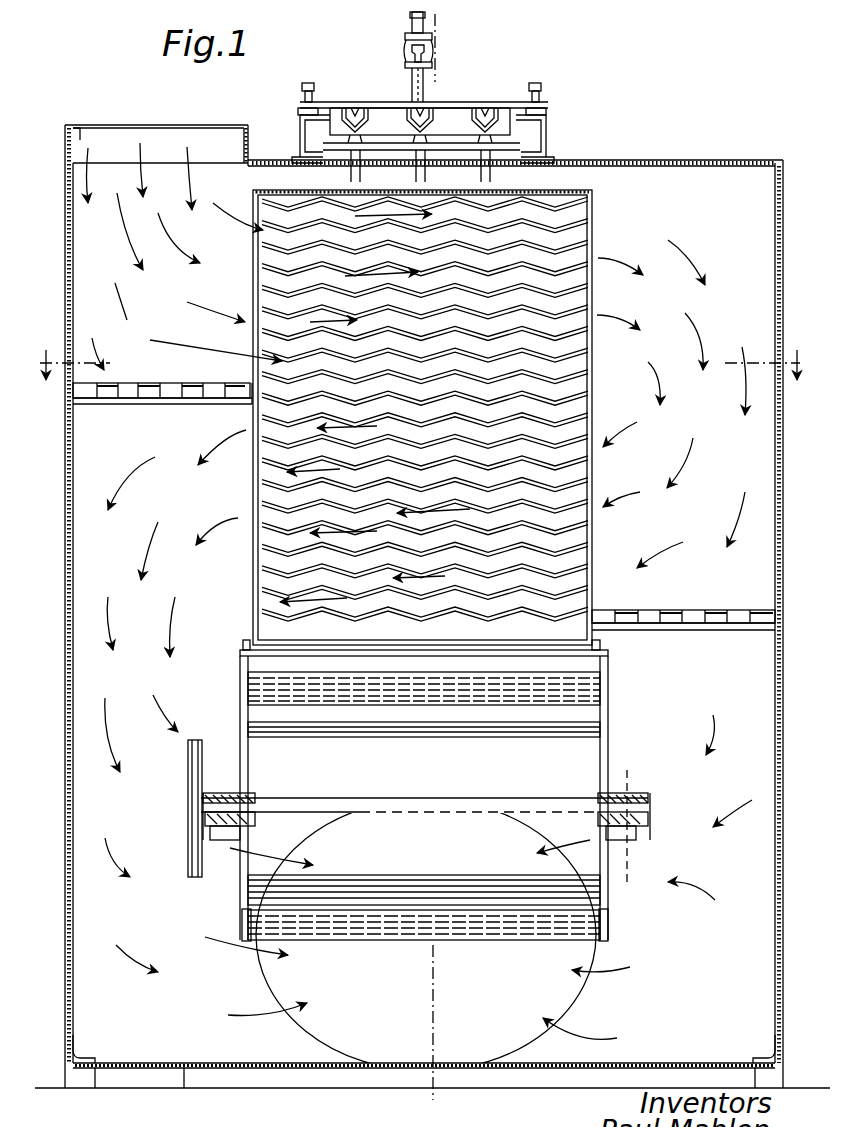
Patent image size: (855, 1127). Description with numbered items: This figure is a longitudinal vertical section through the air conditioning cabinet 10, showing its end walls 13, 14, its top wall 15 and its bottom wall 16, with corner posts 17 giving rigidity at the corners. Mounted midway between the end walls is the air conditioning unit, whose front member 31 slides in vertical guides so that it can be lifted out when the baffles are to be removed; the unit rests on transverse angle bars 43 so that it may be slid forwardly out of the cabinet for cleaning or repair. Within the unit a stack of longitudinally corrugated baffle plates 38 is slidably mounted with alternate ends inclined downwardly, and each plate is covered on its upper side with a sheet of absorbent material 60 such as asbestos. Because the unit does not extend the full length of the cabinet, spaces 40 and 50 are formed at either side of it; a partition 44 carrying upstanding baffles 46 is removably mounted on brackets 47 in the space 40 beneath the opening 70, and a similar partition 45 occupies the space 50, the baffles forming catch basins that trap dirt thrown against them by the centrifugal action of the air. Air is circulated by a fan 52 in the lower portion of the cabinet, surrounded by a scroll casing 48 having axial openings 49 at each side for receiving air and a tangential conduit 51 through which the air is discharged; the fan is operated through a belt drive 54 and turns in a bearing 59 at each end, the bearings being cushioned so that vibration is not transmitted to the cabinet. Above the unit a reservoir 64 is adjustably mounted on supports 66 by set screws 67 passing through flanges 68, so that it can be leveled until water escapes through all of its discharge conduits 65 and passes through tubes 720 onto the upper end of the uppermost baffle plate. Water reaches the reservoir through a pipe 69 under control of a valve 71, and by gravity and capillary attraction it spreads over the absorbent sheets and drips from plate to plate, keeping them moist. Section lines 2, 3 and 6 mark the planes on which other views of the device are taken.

The section line 2- 2 is at (421, 365).
The section line 3- 3 is at (438, 25).
The section line 6- 6 is at (625, 820).
The casing or cabinet 10 is at (426, 603).
The end wall 13 is at (70, 490).
The end wall 14 is at (777, 510).
The top wall 15 is at (645, 160).
The bottom wall 16 is at (184, 1088).
The supporting bars or corner posts 17 is at (65, 132).
The front member 31 is at (590, 380).
The baffle plates 38 is at (590, 216).
The space 40 is at (82, 275).
The angle bars 43 is at (250, 637).
The partition 44 is at (160, 404).
The partition 45 is at (706, 632).
The upstanding baffles 46 is at (185, 388).
The brackets 47 is at (192, 406).
The scroll casing 48 is at (240, 660).
The axial openings 49 is at (241, 732).
The space 50 is at (768, 265).
The tangential opening or conduit 51 is at (266, 975).
The fan 52 is at (606, 688).
The belt drive 54 is at (192, 880).
The bearing 59 is at (226, 797).
The sheet of absorbent material 60 is at (262, 292).
The reservoir 64 is at (454, 112).
The discharge conduits 65 is at (358, 118).
The supports 66 is at (316, 135).
The set screws 67 is at (306, 92).
The flanges 68 is at (300, 108).
The pipe 69 is at (412, 24).
The opening 70 is at (106, 152).
The valve 71 is at (406, 56).
The tubes 720 is at (361, 172).